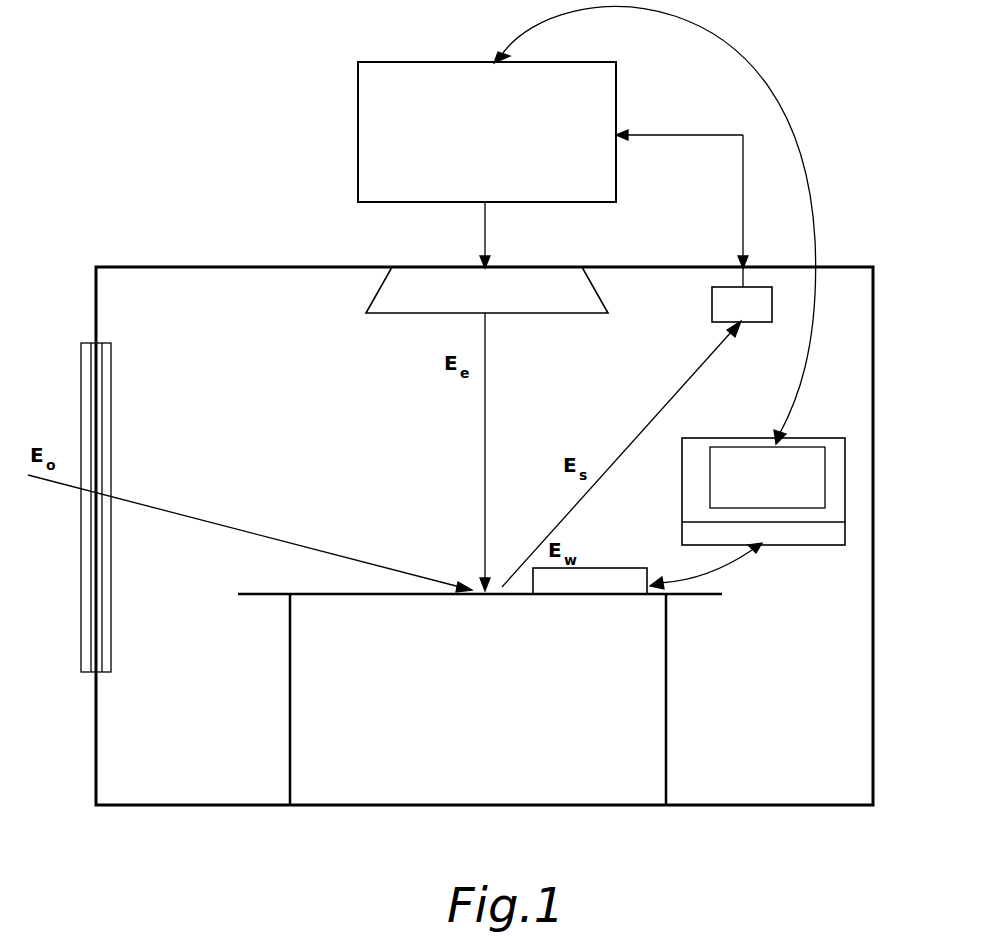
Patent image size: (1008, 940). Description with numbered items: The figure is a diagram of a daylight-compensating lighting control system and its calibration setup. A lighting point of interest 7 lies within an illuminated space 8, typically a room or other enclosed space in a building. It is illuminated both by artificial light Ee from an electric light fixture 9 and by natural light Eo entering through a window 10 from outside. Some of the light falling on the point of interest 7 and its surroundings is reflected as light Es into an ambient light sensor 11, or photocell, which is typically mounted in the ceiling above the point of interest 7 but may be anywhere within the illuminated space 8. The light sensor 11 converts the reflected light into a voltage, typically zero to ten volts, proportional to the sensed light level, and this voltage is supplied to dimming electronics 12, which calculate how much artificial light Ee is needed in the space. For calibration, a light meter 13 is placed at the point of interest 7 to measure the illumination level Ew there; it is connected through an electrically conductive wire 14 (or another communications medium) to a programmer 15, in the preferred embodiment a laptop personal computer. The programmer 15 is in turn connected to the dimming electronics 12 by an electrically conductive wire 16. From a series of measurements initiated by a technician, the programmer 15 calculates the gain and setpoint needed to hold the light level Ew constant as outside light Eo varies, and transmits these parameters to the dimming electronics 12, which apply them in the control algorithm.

The lighting point of interest 7 is at (376, 596).
The illuminated space 8 is at (321, 435).
The electric light fixture 9 is at (533, 309).
The window 10 is at (112, 397).
The ambient light sensor 11 is at (712, 292).
The dimming electronics 12 is at (564, 144).
The light meter 13 is at (595, 568).
The electrically conductive wire 14 is at (730, 567).
The programmer 15 is at (772, 494).
The electrically conductive wire 16 is at (785, 92).